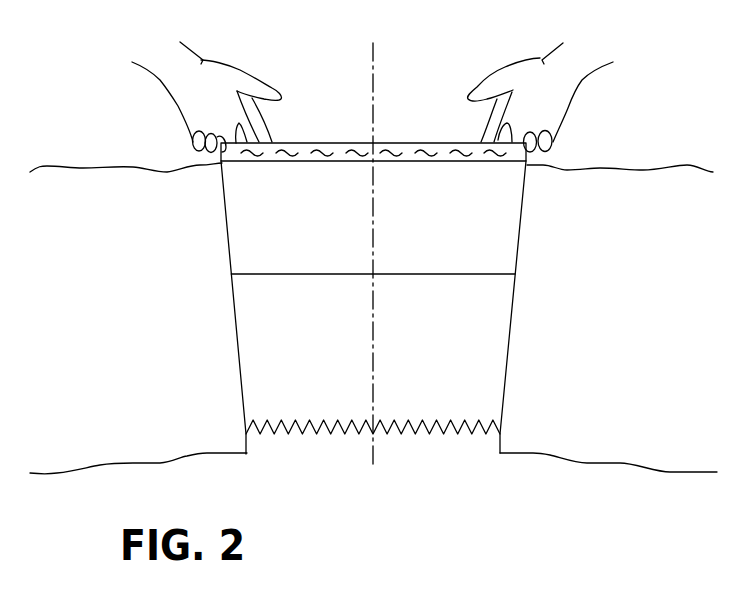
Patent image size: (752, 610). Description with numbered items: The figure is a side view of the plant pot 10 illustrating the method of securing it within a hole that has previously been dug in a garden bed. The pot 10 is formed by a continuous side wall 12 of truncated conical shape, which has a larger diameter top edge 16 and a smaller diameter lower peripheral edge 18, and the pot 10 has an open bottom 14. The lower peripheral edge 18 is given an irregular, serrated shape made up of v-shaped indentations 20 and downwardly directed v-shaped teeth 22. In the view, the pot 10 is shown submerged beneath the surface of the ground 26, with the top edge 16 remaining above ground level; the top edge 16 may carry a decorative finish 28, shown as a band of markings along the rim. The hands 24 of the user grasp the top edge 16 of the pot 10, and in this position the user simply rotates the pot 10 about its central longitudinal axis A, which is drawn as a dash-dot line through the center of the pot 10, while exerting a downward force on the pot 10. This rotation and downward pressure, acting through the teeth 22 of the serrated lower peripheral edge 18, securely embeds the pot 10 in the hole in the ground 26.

The pot 10 is at (391, 297).
The continuous side wall 12 is at (230, 264).
The open bottom 14 is at (406, 463).
The top edge 16 is at (373, 121).
The lower peripheral edge 18 is at (501, 422).
The v-shaped indentations 20 is at (416, 434).
The v-shaped teeth 22 is at (458, 433).
The hands 24 is at (172, 102).
The ground 26 is at (690, 167).
The decorative finish 28 is at (439, 149).
The central longitudinal axis A is at (374, 60).